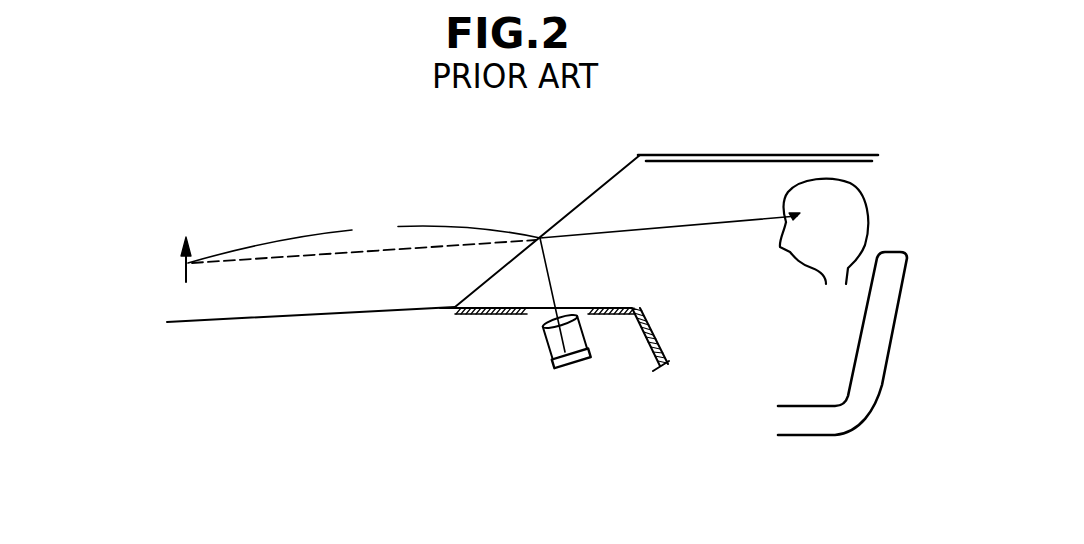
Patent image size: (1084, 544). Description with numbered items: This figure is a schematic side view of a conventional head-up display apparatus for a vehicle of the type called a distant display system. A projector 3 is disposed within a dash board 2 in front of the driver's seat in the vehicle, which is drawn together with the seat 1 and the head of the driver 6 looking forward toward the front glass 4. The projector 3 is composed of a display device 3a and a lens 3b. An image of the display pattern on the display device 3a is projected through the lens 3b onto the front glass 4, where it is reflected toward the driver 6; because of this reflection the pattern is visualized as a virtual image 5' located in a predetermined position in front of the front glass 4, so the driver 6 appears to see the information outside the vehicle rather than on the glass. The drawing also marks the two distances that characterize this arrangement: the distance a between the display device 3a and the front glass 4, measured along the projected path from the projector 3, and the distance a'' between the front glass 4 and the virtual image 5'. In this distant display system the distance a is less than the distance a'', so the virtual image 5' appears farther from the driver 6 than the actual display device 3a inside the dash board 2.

The seat 1 is at (882, 357).
The dash board 2 is at (622, 306).
The projector 3 is at (558, 383).
The display device 3a is at (579, 366).
The lens 3b is at (572, 327).
The front glass 4 is at (580, 202).
The virtual image 5' is at (167, 272).
The driver 6 is at (867, 208).
The distance between the display device and the front glass a is at (547, 295).
The distance between the front glass and the virtual image a'' is at (364, 238).